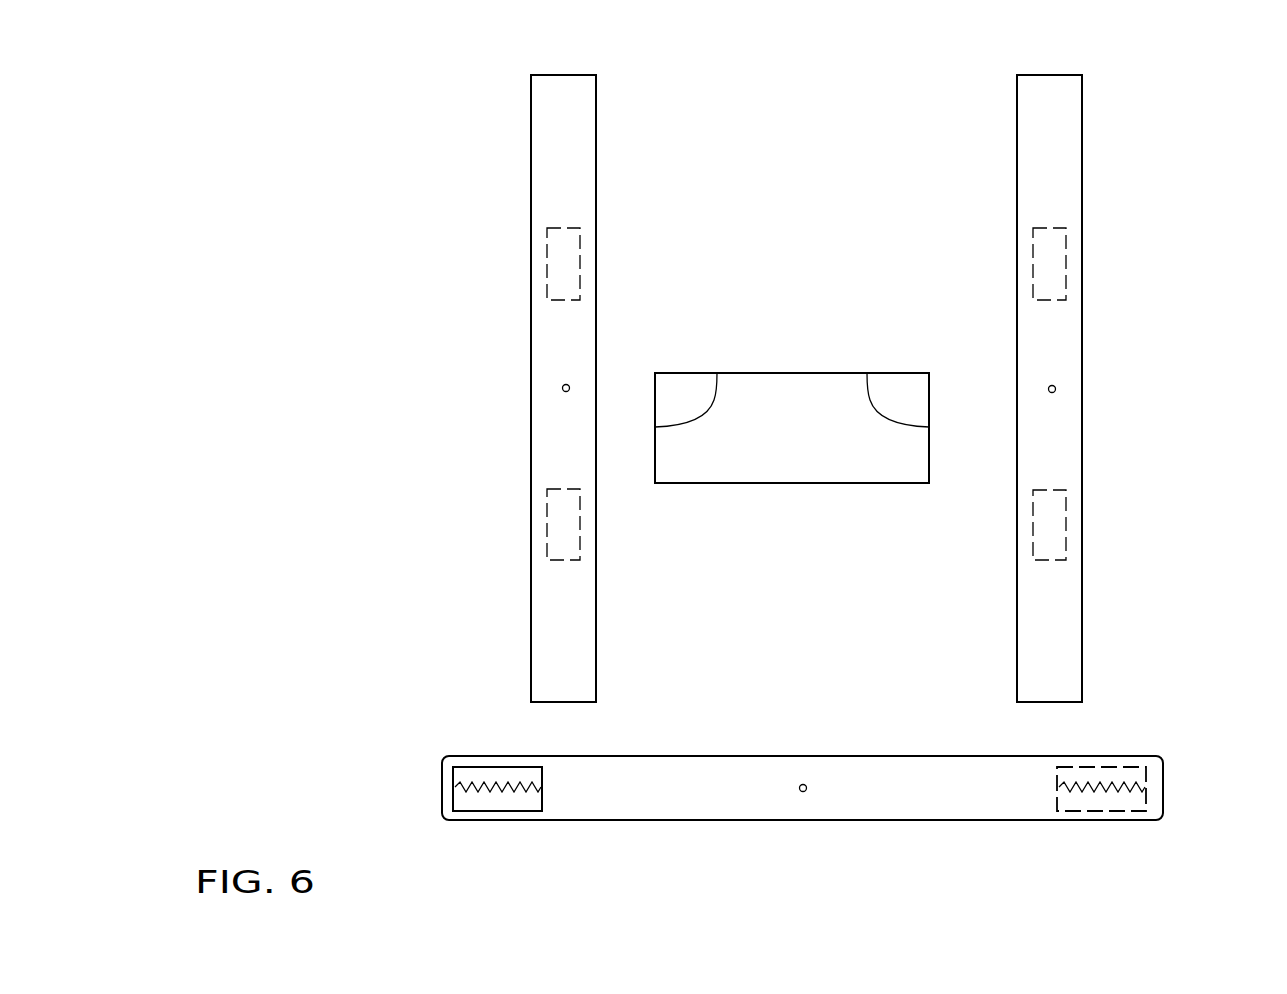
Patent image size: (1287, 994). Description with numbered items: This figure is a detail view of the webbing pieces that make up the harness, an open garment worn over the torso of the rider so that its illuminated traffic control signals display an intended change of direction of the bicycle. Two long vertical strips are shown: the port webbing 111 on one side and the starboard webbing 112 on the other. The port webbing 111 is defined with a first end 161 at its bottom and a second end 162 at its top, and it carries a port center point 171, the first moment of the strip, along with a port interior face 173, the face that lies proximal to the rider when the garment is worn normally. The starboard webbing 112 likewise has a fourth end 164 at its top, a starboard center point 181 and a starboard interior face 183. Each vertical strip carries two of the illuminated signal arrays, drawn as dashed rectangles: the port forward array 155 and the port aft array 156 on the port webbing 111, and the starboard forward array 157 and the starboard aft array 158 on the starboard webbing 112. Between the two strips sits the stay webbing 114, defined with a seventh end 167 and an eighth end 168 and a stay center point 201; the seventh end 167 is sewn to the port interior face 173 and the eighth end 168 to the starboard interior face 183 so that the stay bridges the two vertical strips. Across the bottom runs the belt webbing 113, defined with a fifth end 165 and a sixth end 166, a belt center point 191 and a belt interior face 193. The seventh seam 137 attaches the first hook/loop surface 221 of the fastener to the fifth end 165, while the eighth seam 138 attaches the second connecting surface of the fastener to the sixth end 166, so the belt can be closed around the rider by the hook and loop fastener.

The port webbing 111 is at (1082, 201).
The starboard webbing 112 is at (525, 229).
The belt webbing 113 is at (700, 822).
The stay webbing 114 is at (797, 486).
The seventh seam 137 is at (490, 790).
The eighth seam 138 is at (1103, 788).
The port forward array 155 is at (1050, 260).
The port aft array 156 is at (1066, 512).
The starboard forward array 157 is at (547, 263).
The starboard aft array 158 is at (547, 528).
The first end 161 is at (1050, 703).
The second end 162 is at (1050, 75).
The fourth end 164 is at (562, 74).
The fifth end 165 is at (563, 703).
The sixth end 166 is at (1163, 786).
The seventh end 167 is at (867, 373).
The eighth end 168 is at (718, 373).
The port center point 171 is at (1055, 388).
The port interior face 173 is at (1050, 138).
The starboard center point 181 is at (562, 388).
The starboard interior face 183 is at (582, 145).
The belt center point 191 is at (803, 792).
The belt interior face 193 is at (982, 800).
The stay center point 201 is at (731, 438).
The first hook/loop surface 221 is at (470, 767).